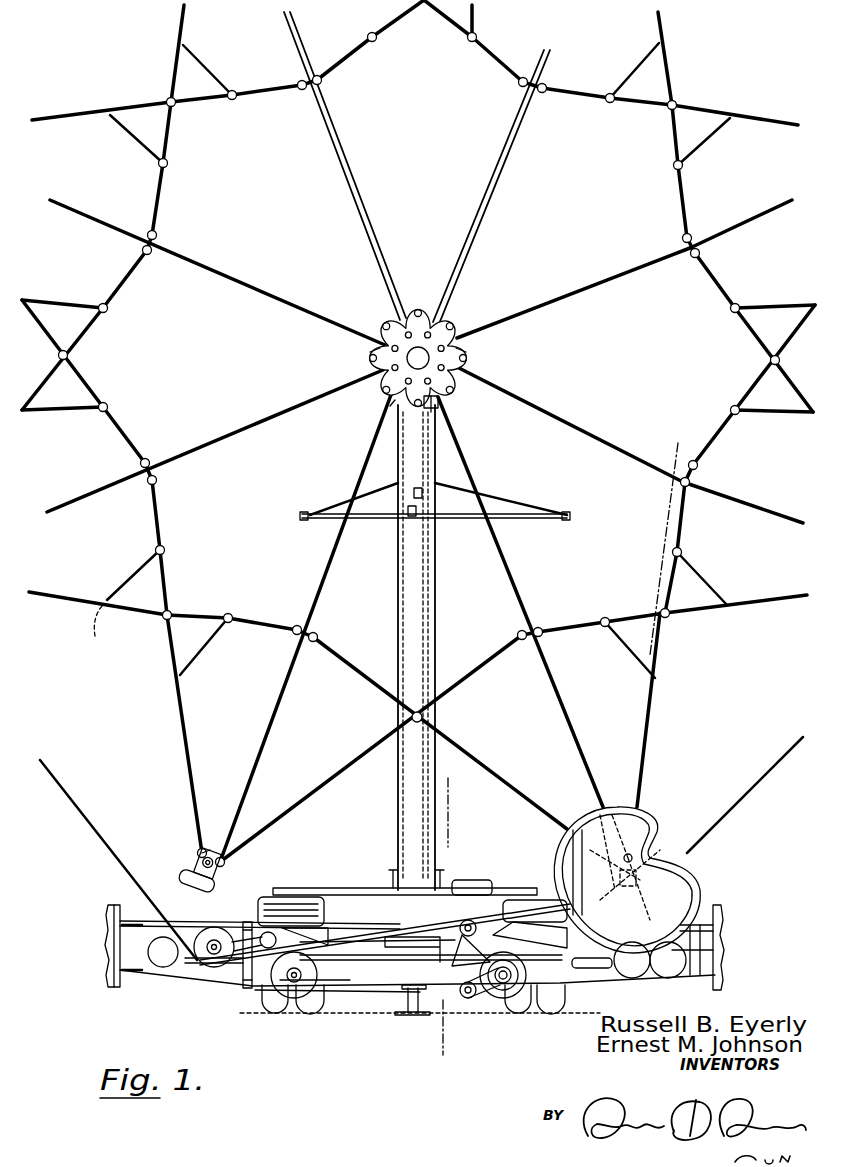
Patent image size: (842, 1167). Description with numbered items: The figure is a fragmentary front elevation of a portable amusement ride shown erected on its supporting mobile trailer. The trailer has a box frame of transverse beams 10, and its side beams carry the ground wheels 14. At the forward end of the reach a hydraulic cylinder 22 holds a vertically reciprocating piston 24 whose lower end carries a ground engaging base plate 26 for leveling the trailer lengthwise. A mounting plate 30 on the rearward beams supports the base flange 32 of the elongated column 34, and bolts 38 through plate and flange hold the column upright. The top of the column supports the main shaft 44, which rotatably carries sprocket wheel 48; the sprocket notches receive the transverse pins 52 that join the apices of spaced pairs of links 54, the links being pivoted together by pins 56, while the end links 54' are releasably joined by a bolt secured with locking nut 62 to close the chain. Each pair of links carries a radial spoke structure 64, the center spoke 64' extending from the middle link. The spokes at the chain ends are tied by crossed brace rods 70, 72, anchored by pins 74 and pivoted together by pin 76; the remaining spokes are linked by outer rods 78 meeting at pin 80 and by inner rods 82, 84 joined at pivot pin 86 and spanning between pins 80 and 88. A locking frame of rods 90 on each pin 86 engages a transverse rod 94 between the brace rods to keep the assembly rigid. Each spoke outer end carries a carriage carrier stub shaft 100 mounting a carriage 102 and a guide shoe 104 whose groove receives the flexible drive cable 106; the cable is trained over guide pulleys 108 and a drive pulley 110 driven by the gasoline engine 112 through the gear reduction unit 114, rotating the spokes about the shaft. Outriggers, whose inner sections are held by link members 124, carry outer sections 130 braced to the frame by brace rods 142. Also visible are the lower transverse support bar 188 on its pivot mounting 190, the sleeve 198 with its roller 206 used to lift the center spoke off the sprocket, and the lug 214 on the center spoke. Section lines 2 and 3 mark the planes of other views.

The section line 2- 2 is at (460, 811).
The section line 3- 3 is at (689, 451).
The transverse beams 10 is at (357, 1000).
The ground wheels 14 is at (300, 1014).
The hydraulic cylinder 22 is at (412, 1015).
The piston 24 is at (420, 1015).
The ground engaging base plate 26 is at (404, 1020).
The mounting plate 30 is at (420, 955).
The base flange 32 is at (436, 950).
The column 34 is at (397, 805).
The bolts 38 is at (412, 937).
The shaft 44 is at (418, 348).
The sprocket wheel 48 is at (388, 332).
The transverse pins 52 is at (455, 368).
The links 54 is at (350, 357).
The end links 54' is at (365, 419).
The pins 56 is at (452, 330).
The locking nut 62 is at (440, 399).
The radial spoke structure 64 is at (368, 281).
The center spoke structure 64' is at (351, 166).
The crossed brace rod 70 is at (470, 675).
The crossed brace rod 72 is at (368, 680).
The pins 74 is at (318, 640).
The pin 76 is at (424, 718).
The outer rods 78 is at (60, 612).
The pin 80 is at (163, 620).
The inner rod 82 is at (165, 595).
The inner rod 84 is at (163, 518).
The pivot pin 86 is at (165, 552).
The pivot pin 88 is at (150, 486).
The locking frame rods 90 is at (135, 575).
The transverse rod 94 is at (96, 628).
The carriage carrier stub shaft 100 is at (200, 858).
The carriage 102 is at (680, 826).
The guide shoe 104 is at (183, 882).
The flexible drive cable 106 is at (110, 850).
The guide pulleys 108 is at (216, 968).
The drive pulley 110 is at (540, 960).
The gasoline engine 112 is at (482, 882).
The gear reduction unit 114 is at (478, 915).
The link member 124 is at (165, 985).
The outer outrigger section 130 is at (108, 960).
The brace rod 142 is at (598, 968).
The lower transverse support bar 188 is at (325, 888).
The pivot mounting 190 is at (385, 872).
The sleeve 198 is at (512, 520).
The roller 206 is at (420, 513).
The lug 214 is at (425, 495).